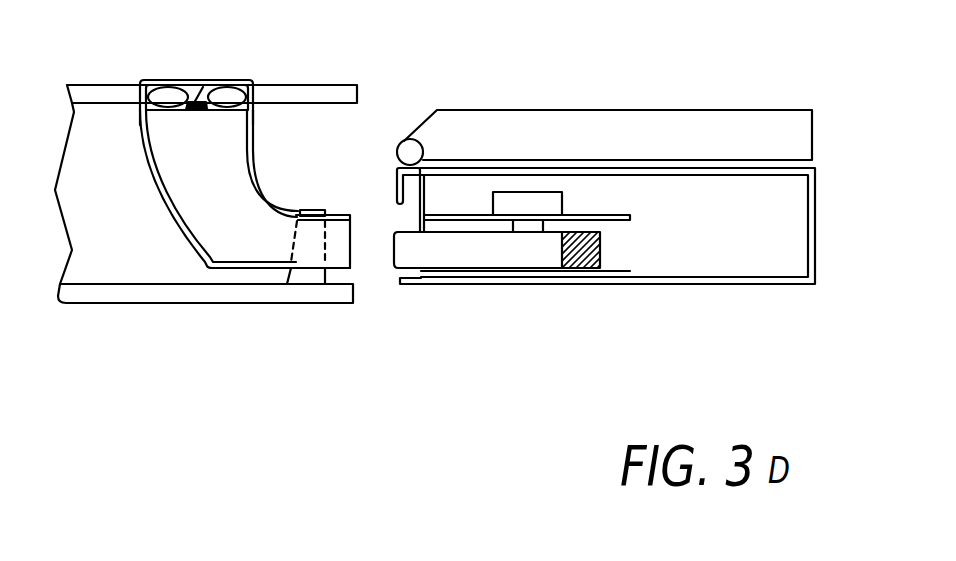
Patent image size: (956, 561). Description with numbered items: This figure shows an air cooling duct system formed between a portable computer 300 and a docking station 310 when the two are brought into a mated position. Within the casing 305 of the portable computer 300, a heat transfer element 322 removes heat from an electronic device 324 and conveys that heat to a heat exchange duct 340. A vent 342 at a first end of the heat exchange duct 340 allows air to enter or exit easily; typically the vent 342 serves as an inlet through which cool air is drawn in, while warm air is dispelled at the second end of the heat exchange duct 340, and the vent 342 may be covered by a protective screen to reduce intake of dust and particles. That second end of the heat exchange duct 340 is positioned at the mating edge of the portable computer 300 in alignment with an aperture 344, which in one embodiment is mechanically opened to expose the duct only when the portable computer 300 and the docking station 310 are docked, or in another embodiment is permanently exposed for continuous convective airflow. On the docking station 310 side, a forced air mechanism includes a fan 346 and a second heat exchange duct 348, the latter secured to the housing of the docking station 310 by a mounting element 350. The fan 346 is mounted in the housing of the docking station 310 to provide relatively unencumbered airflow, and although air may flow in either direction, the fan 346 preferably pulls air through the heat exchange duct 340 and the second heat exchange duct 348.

The portable computer 300 is at (748, 100).
The casing 305 is at (758, 283).
The docking station 310 is at (178, 303).
The heat transfer element 322 is at (512, 228).
The electronic device 324 is at (562, 203).
The heat exchange duct 340 is at (445, 248).
The vent 342 is at (585, 258).
The aperture 344 is at (400, 214).
The fan 346 is at (176, 82).
The second heat exchange duct 348 is at (245, 189).
The mounting element 350 is at (312, 208).